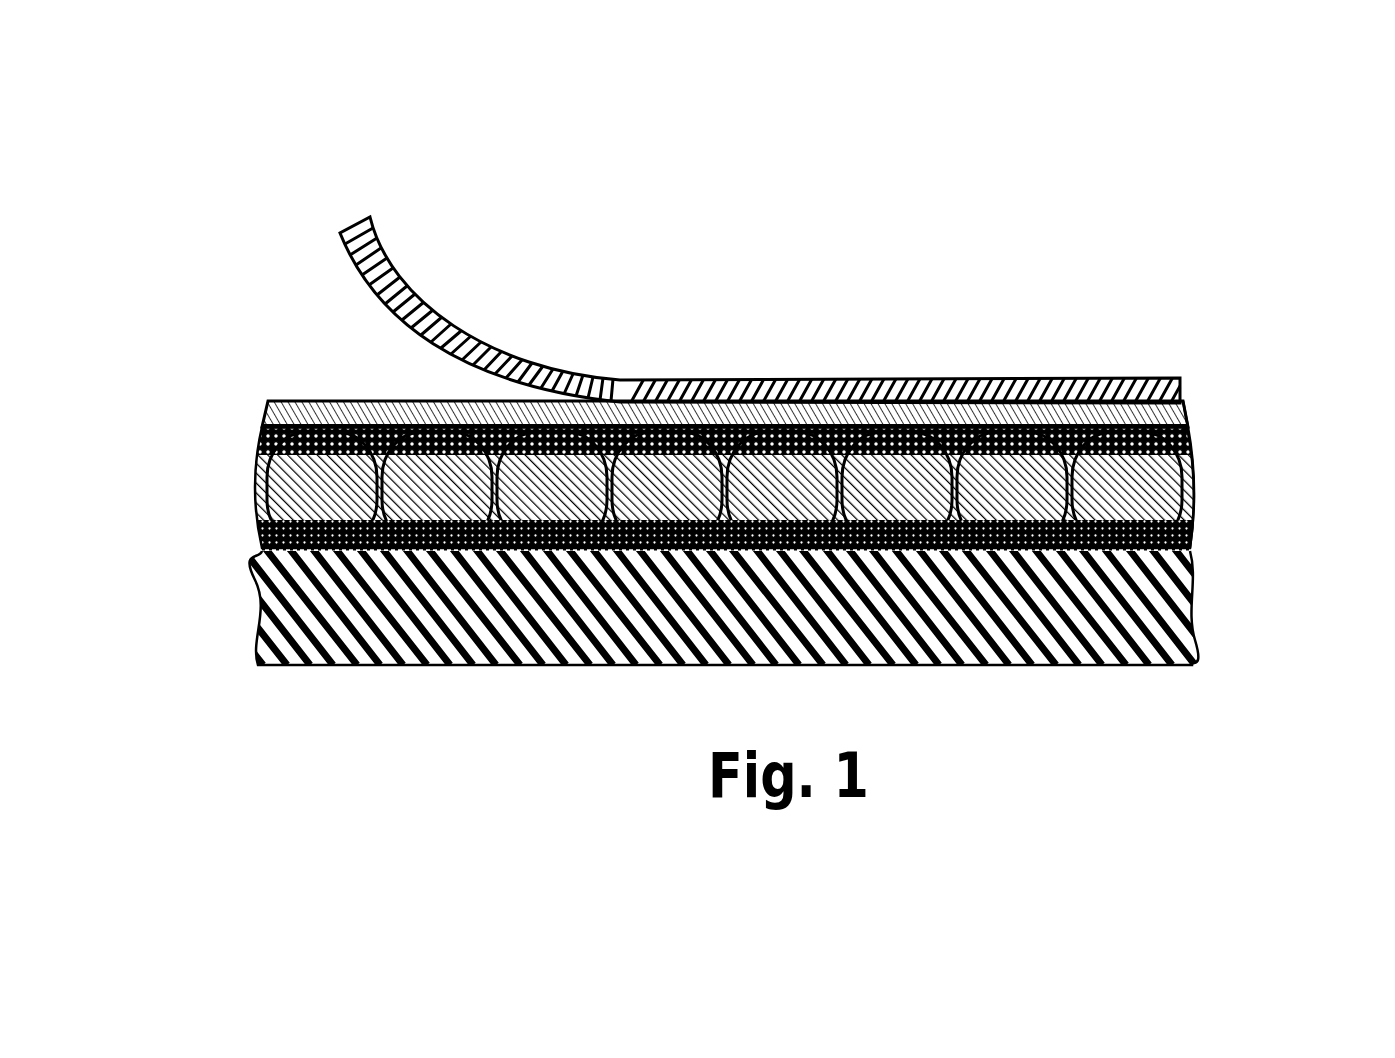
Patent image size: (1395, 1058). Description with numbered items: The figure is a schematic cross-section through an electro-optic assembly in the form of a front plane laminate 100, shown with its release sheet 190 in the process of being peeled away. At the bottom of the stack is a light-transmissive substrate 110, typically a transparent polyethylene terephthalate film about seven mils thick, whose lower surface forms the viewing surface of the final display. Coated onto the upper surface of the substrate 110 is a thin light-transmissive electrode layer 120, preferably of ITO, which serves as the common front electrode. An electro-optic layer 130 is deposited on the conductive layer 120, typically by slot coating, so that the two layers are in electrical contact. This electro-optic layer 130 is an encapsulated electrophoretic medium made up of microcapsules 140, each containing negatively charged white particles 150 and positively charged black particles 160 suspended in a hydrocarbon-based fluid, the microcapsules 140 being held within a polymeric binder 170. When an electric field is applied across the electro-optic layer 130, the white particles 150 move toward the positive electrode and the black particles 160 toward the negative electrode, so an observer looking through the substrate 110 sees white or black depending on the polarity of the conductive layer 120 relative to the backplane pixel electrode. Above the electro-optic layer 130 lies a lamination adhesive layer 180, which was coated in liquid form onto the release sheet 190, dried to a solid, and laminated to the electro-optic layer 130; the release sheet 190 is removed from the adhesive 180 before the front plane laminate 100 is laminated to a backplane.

The front plane laminate 100 is at (502, 278).
The light-transmissive substrate 110 is at (1138, 610).
The light-transmissive electrode layer 120 is at (1190, 550).
The electro-optic layer 130 is at (725, 489).
The microcapsules 140 is at (280, 482).
The white particles 150 is at (262, 423).
The black particles 160 is at (266, 549).
The polymeric binder 170 is at (1193, 422).
The lamination adhesive layer 180 is at (365, 401).
The release sheet 190 is at (748, 372).